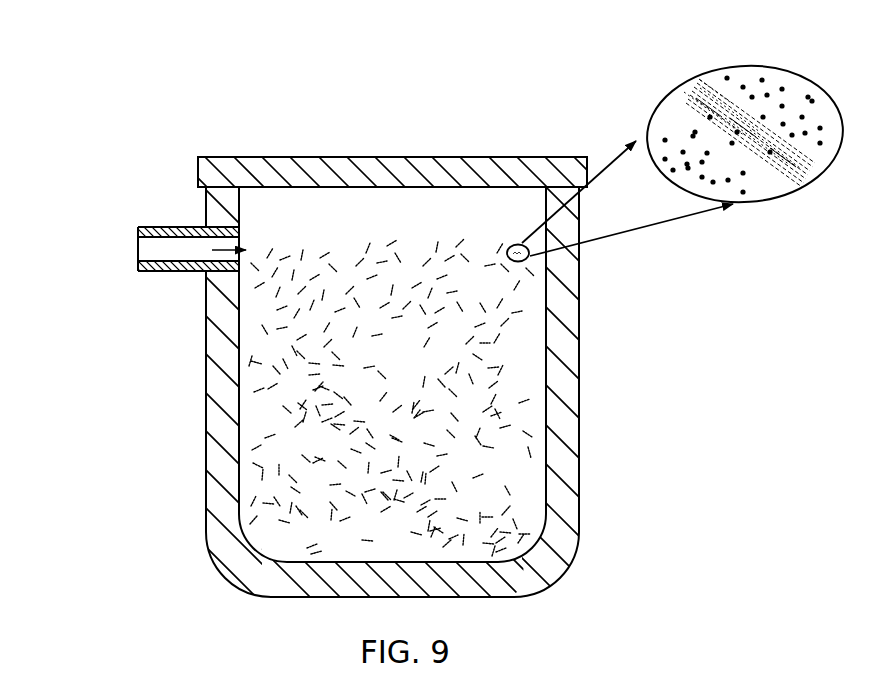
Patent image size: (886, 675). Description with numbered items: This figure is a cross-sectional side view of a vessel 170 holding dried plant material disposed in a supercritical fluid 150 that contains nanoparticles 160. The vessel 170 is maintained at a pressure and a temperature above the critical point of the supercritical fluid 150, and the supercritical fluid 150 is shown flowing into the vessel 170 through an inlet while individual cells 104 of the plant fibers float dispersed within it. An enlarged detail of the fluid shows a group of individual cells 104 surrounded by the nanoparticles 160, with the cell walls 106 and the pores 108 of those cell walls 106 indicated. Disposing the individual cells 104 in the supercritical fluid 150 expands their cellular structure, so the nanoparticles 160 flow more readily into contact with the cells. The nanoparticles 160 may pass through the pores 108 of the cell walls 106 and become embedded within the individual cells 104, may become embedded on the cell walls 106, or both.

The vessel 170 is at (346, 150).
The supercritical fluid 150 is at (124, 249).
The individual cells 104 is at (316, 548).
The cell walls 106 is at (697, 125).
The pores 108 is at (730, 150).
The nanoparticles 160 is at (768, 147).